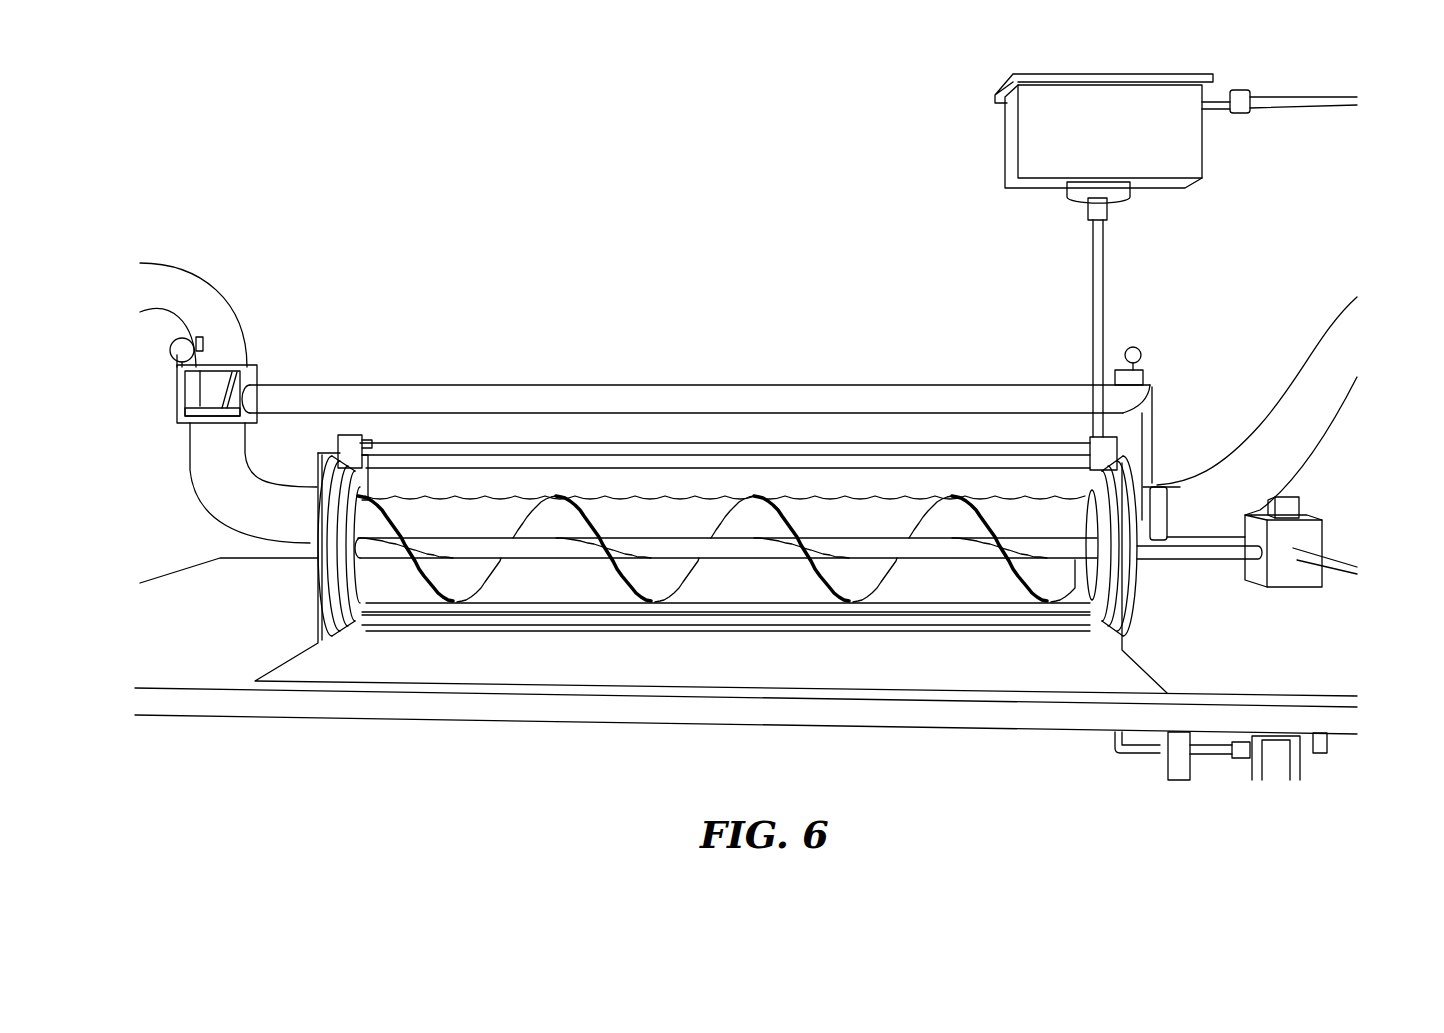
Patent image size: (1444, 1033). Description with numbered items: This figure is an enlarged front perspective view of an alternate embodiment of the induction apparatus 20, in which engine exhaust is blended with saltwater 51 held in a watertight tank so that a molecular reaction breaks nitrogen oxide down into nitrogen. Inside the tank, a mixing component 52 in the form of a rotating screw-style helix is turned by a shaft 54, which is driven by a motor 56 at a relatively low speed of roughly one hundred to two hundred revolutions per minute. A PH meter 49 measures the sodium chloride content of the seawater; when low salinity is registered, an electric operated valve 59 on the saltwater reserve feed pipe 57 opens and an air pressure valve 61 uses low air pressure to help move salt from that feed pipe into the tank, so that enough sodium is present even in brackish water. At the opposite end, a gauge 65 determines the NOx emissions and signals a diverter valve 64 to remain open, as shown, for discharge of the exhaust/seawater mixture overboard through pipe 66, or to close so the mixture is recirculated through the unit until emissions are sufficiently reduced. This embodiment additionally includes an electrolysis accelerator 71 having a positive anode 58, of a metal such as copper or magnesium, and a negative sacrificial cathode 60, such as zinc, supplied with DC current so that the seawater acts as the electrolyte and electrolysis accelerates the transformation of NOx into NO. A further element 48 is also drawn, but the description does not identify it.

The induction apparatus 20 is at (656, 309).
The outlet pipe 48 is at (1290, 383).
The PH meter 49 is at (1127, 347).
The saltwater 51 is at (423, 493).
The mixing component 52 is at (528, 579).
The shaft 54 is at (1182, 550).
The motor 56 is at (1325, 488).
The saltwater reserve feed pipe 57 is at (1093, 302).
The anode 58 is at (1113, 440).
The electric operated valve 59 is at (1103, 210).
The cathode 60 is at (352, 447).
The air pressure valve 61 is at (1135, 378).
The diverter valve 64 is at (231, 339).
The gauge 65 is at (182, 350).
The pipe 66 is at (250, 503).
The electrolysis accelerator 71 is at (305, 486).